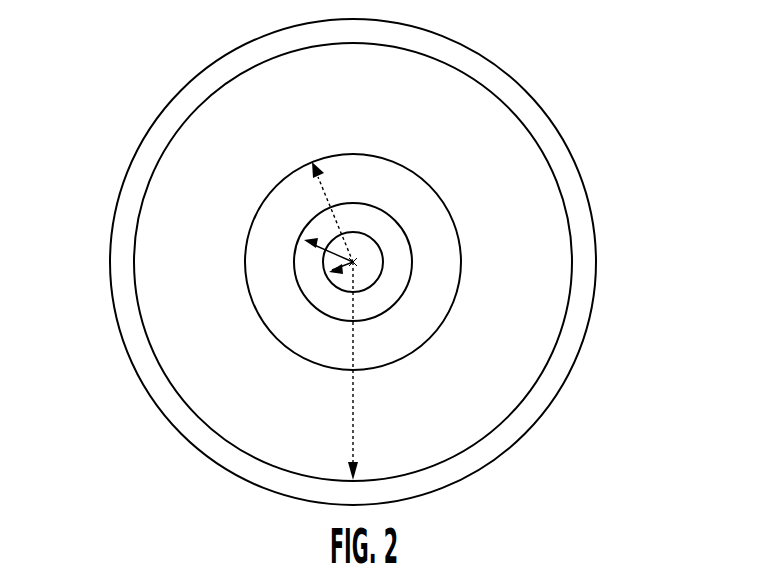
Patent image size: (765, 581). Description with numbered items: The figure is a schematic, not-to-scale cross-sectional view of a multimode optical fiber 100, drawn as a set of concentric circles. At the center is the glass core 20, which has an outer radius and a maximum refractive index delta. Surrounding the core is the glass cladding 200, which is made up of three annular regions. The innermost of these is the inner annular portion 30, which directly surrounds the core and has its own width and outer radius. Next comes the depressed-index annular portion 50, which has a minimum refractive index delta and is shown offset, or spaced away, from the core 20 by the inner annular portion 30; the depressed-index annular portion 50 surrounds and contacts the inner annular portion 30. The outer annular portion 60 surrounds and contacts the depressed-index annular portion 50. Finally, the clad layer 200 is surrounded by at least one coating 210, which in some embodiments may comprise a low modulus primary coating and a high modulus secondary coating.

The multimode optical fiber 100 is at (84, 142).
The glass cladding 200 is at (440, 262).
The coating 210 is at (138, 352).
The outer annular portion 60 is at (485, 188).
The depressed-index annular portion 50 is at (410, 228).
The inner annular portion 30 is at (397, 262).
The glass core 20 is at (363, 270).